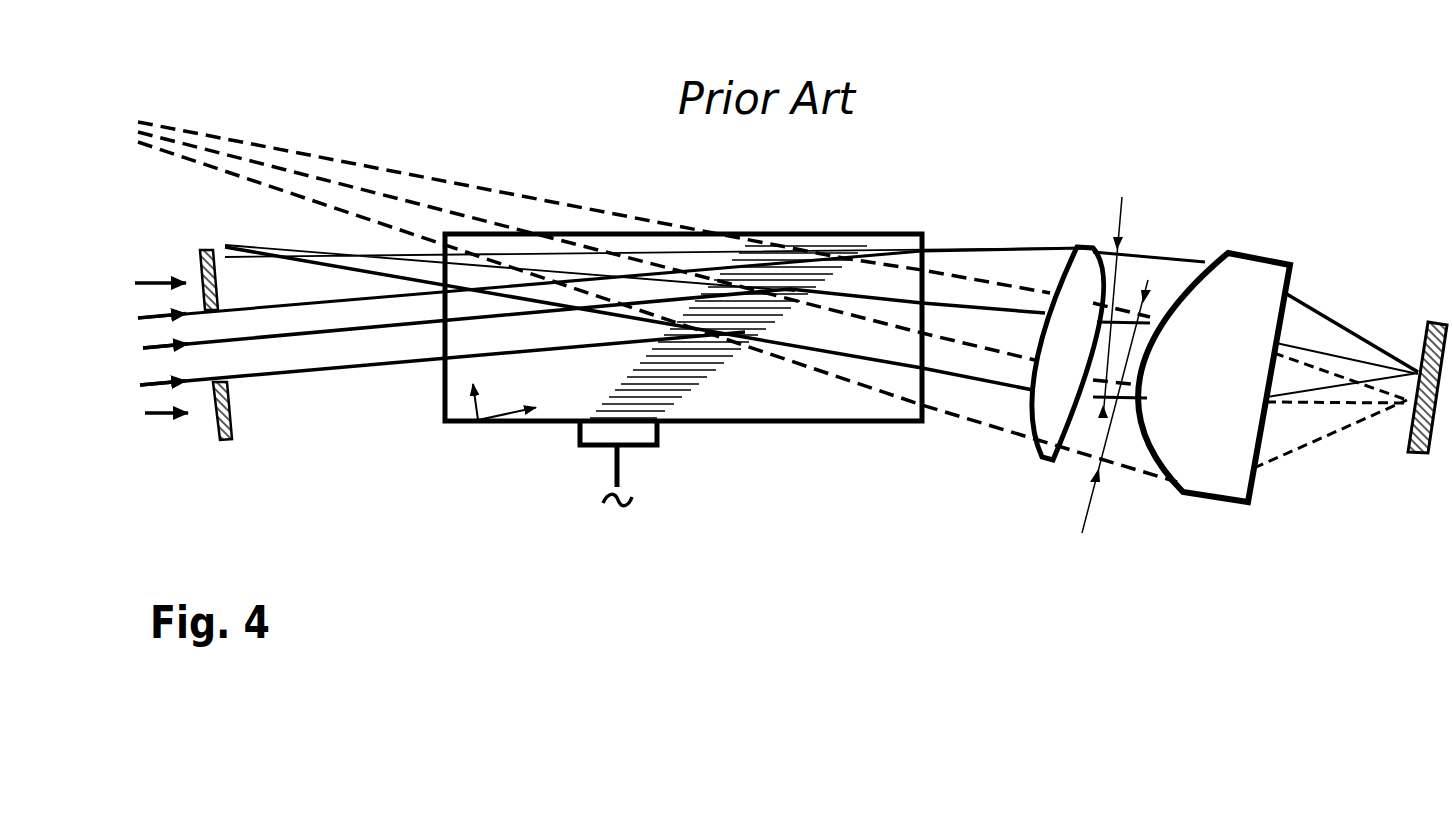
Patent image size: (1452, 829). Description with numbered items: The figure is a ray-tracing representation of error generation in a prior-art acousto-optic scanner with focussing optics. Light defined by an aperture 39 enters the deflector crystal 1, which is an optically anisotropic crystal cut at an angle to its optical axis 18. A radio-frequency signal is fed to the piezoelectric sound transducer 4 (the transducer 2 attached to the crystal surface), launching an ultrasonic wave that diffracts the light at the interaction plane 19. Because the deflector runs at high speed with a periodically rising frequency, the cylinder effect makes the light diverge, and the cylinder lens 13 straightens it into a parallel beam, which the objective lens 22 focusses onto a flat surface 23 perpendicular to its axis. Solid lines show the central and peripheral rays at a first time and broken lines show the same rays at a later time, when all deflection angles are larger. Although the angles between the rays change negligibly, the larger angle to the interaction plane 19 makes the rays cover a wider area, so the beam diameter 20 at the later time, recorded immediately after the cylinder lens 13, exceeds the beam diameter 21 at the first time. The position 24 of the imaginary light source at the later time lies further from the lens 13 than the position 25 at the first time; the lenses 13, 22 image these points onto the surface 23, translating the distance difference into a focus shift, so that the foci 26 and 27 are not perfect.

The crystal 1 is at (455, 373).
The transducer 2 is at (638, 435).
The piezoelectric sound transducer 4 is at (616, 500).
The cylinder lens 13 is at (1052, 423).
The optical axis 18 is at (479, 396).
The interaction plane 19 is at (667, 393).
The beam diameter 20 is at (1090, 508).
The beam diameter 21 is at (1118, 222).
The objective lens 22 is at (1255, 273).
The flat surface 23 is at (1417, 445).
The position of the imaginary light source 24 is at (203, 150).
The position of the imaginary light source 25 is at (266, 250).
The focus 26 is at (1415, 370).
The focus 27 is at (1400, 403).
The aperture 39 is at (230, 435).